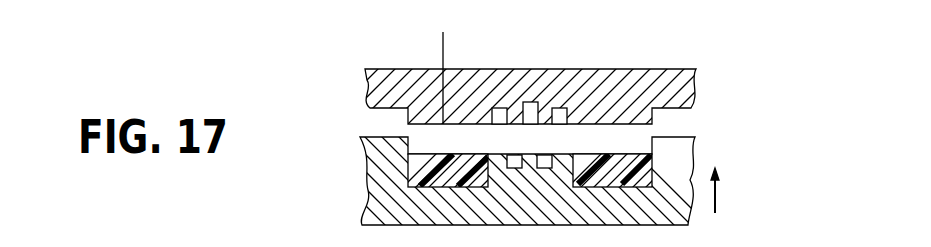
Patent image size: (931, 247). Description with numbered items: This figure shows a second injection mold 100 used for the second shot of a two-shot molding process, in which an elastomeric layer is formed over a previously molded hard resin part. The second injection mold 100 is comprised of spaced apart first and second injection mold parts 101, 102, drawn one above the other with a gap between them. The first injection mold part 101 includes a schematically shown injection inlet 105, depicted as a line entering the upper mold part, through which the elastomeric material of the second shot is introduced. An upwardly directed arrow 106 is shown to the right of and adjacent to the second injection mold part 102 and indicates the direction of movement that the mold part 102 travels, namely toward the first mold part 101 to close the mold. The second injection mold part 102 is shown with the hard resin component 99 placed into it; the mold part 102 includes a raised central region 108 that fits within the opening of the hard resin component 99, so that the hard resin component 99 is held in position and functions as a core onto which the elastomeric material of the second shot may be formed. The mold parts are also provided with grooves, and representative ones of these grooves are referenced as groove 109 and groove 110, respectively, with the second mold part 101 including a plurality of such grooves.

The hard resin component 99 is at (630, 157).
The second injection mold 100 is at (536, 116).
The first injection mold part 101 is at (367, 78).
The second injection mold part 102 is at (360, 193).
The injection inlet 105 is at (443, 47).
The arrow 106 is at (717, 207).
The raised central region 108 is at (577, 157).
The groove 109 is at (543, 167).
The groove 110 is at (532, 102).